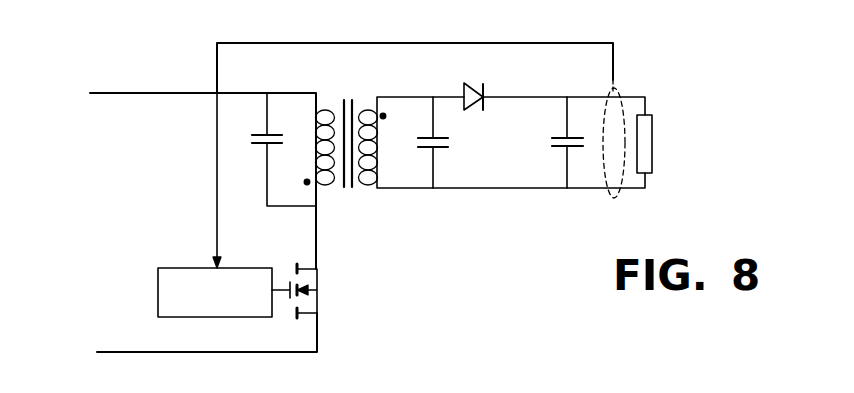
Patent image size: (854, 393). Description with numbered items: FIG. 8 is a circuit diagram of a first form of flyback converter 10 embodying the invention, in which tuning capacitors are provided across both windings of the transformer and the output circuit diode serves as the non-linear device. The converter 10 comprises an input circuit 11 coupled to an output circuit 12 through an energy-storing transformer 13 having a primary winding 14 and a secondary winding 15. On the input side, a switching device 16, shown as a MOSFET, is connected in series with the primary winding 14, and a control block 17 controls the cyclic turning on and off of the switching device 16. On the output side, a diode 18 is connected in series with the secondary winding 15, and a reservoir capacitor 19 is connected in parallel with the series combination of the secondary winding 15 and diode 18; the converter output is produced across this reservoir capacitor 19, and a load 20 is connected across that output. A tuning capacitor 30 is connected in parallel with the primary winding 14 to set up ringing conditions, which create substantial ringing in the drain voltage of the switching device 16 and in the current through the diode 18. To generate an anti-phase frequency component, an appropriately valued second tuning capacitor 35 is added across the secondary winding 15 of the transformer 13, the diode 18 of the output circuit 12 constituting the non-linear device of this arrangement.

The flyback converter 10 is at (177, 68).
The input circuit 11 is at (203, 222).
The output circuit 12 is at (511, 152).
The energy-storing transformer 13 is at (353, 197).
The primary winding 14 is at (328, 112).
The secondary winding 15 is at (363, 112).
The switching device 16 is at (318, 294).
The control block 17 is at (237, 268).
The diode 18 is at (462, 92).
The reservoir capacitor 19 is at (558, 137).
The load 20 is at (656, 148).
The tuning capacitor 30 is at (262, 148).
The second tuning capacitor 35 is at (424, 152).